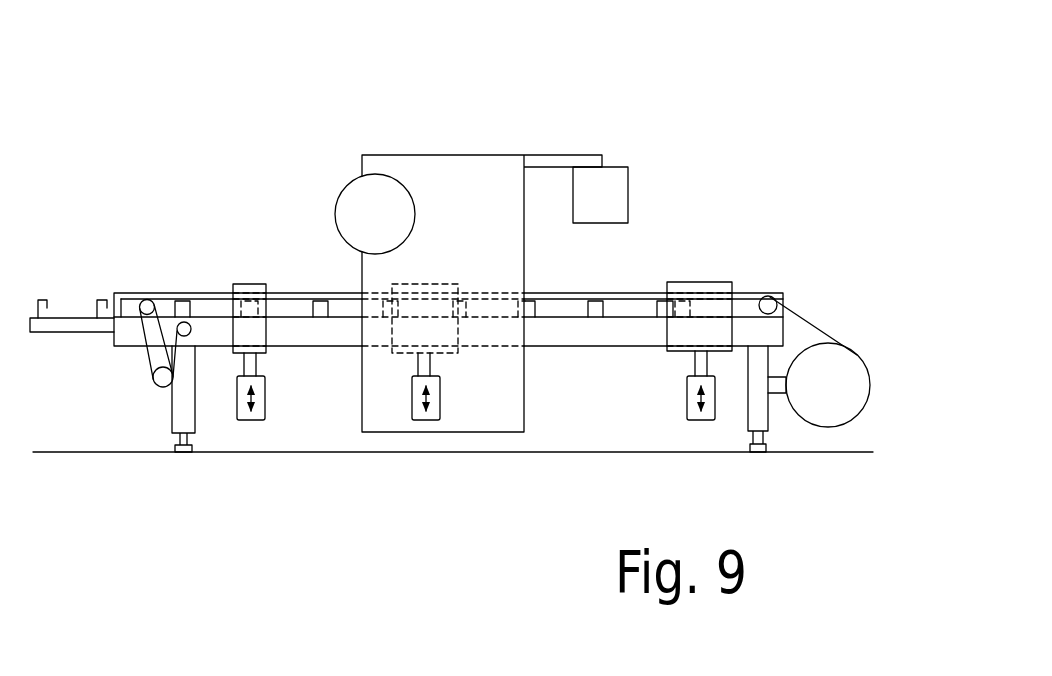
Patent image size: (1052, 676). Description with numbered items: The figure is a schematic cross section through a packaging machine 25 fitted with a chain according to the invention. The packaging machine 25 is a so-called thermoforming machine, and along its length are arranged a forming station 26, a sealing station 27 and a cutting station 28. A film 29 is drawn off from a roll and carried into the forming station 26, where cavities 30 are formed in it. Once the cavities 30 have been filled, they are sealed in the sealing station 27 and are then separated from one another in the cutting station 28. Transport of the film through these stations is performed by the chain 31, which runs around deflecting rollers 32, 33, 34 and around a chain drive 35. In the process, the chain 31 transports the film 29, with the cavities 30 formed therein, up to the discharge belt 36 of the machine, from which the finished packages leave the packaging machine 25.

The packaging machine 25 is at (565, 102).
The forming station 26 is at (698, 259).
The sealing station 27 is at (431, 260).
The cutting station 28 is at (243, 258).
The film 29 is at (801, 313).
The cavities 30 is at (626, 298).
The chain 31 is at (320, 320).
The deflecting roller 32 is at (768, 300).
The deflecting roller 33 is at (147, 303).
The deflecting roller 34 is at (189, 331).
The chain drive 35 is at (156, 383).
The discharge belt 36 is at (78, 327).